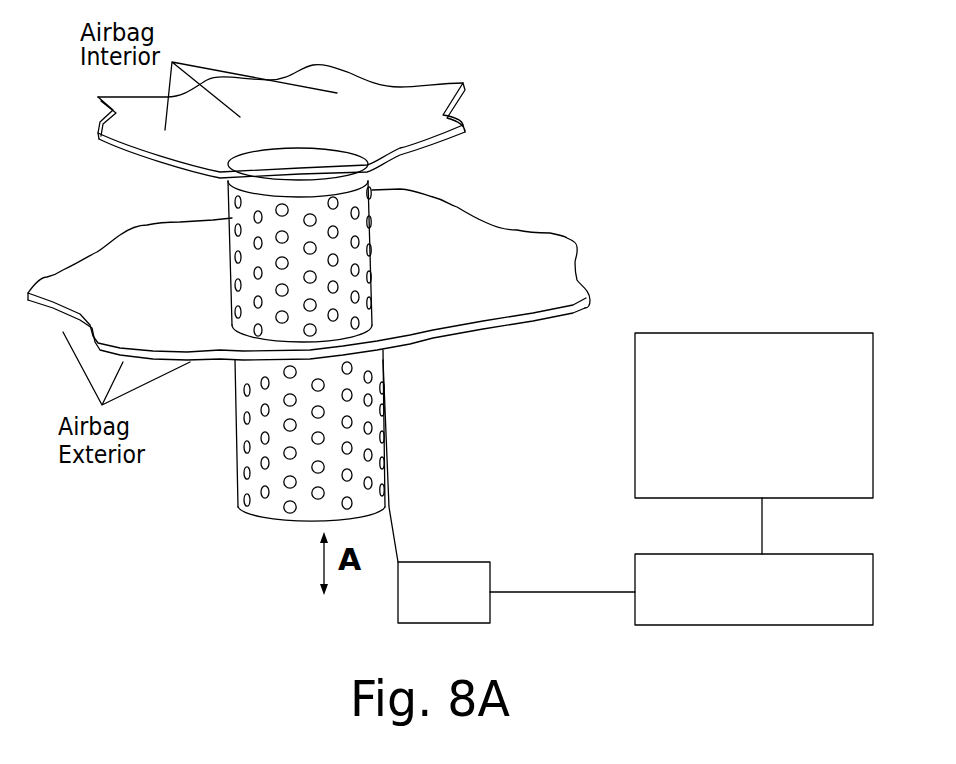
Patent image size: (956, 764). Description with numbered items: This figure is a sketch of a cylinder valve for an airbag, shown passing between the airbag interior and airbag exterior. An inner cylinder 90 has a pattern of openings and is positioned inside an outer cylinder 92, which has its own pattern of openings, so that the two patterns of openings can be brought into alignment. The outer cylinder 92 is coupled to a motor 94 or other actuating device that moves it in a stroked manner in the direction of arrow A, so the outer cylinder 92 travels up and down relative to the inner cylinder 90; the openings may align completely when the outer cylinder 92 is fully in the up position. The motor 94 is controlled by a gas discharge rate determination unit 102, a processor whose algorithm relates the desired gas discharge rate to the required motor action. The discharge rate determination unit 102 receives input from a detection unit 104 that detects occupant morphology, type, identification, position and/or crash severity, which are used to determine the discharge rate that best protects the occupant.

The inner cylinder 90 is at (375, 285).
The outer cylinder 92 is at (382, 397).
The motor 94 is at (422, 560).
The gas discharge rate determination unit 102 is at (658, 553).
The detection unit 104 is at (635, 379).